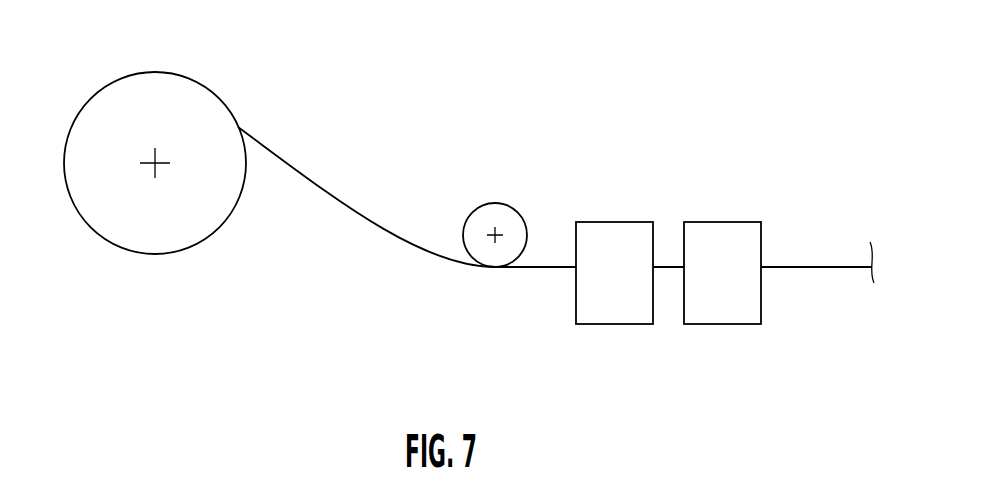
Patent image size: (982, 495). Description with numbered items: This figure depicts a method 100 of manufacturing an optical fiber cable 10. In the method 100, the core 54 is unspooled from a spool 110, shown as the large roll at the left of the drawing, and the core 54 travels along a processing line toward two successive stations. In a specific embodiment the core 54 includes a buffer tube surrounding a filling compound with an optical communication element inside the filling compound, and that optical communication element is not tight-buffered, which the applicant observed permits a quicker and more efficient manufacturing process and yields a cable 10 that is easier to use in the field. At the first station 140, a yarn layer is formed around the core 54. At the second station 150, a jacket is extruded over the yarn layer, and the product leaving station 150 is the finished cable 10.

The spool 110 is at (97, 132).
The core 54 is at (303, 273).
The station 140 is at (627, 222).
The station 150 is at (735, 222).
The cable 10 is at (813, 313).
The method 100 is at (727, 82).